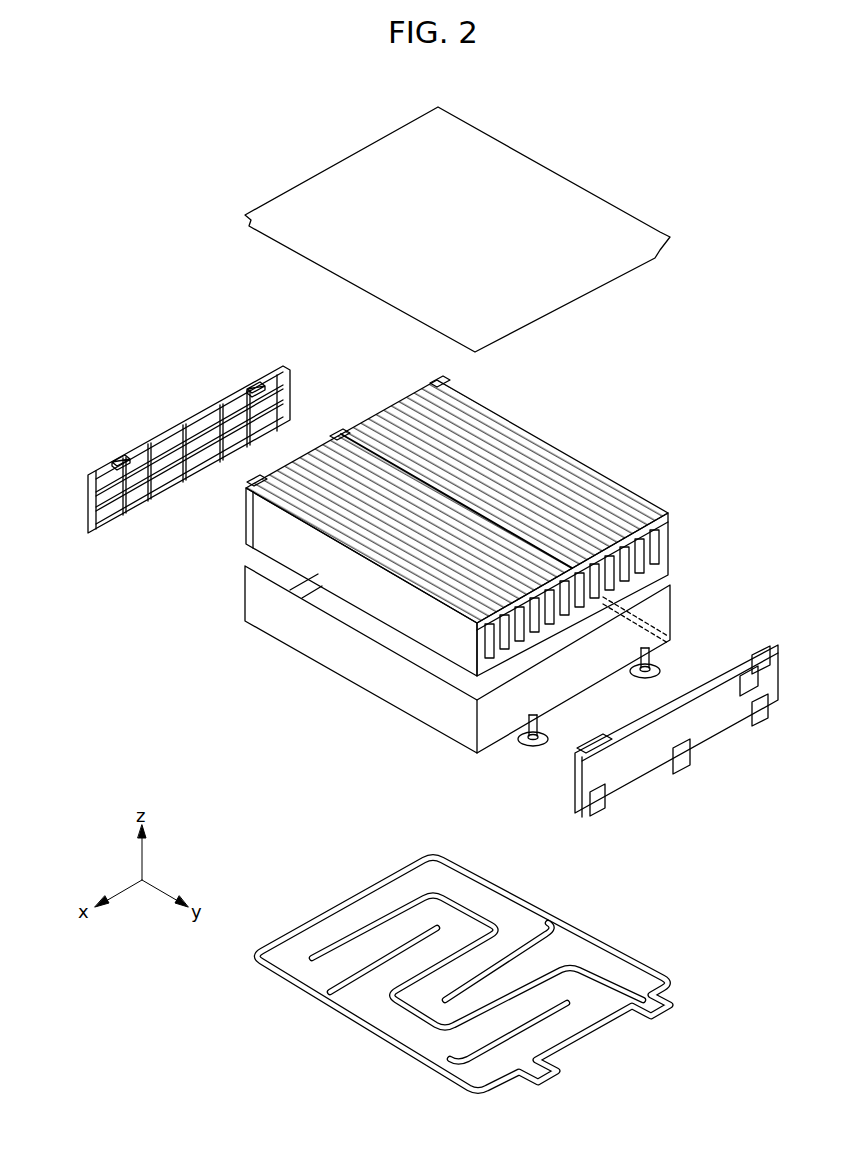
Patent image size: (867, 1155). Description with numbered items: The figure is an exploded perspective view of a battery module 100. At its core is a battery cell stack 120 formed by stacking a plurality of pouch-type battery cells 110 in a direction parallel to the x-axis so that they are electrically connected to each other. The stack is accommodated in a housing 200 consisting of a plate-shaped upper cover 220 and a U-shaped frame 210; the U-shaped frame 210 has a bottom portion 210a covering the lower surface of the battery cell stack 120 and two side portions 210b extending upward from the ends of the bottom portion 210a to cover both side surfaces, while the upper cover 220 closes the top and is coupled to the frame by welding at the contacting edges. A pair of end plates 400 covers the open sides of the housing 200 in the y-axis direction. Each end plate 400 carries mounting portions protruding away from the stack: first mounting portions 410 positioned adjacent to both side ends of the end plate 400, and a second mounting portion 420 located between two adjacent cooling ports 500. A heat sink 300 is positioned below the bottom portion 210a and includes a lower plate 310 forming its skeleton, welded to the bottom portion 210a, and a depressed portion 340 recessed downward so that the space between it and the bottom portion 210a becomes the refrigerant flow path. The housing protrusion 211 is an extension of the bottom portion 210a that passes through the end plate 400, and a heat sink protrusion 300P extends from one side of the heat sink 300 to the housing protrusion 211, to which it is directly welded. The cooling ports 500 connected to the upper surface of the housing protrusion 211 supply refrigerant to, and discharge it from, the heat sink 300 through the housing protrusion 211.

The battery module 100 is at (198, 119).
The battery cell 110 is at (515, 437).
The battery cell stack 120 is at (457, 524).
The housing 200 is at (740, 370).
The U-shaped frame 210 is at (446, 661).
The bottom portion 210a is at (430, 722).
The side portion 210b is at (355, 668).
The housing protrusion 211 is at (510, 745).
The upper cover 220 is at (570, 200).
The heat sink 300 is at (494, 975).
The lower plate 310 is at (310, 990).
The depressed portion 340 is at (570, 1030).
The heat sink protrusion 300P is at (675, 1008).
The end plate 400 is at (190, 412).
The first mounting portion 410 is at (765, 727).
The second mounting portion 420 is at (690, 770).
The cooling port 500 is at (645, 660).